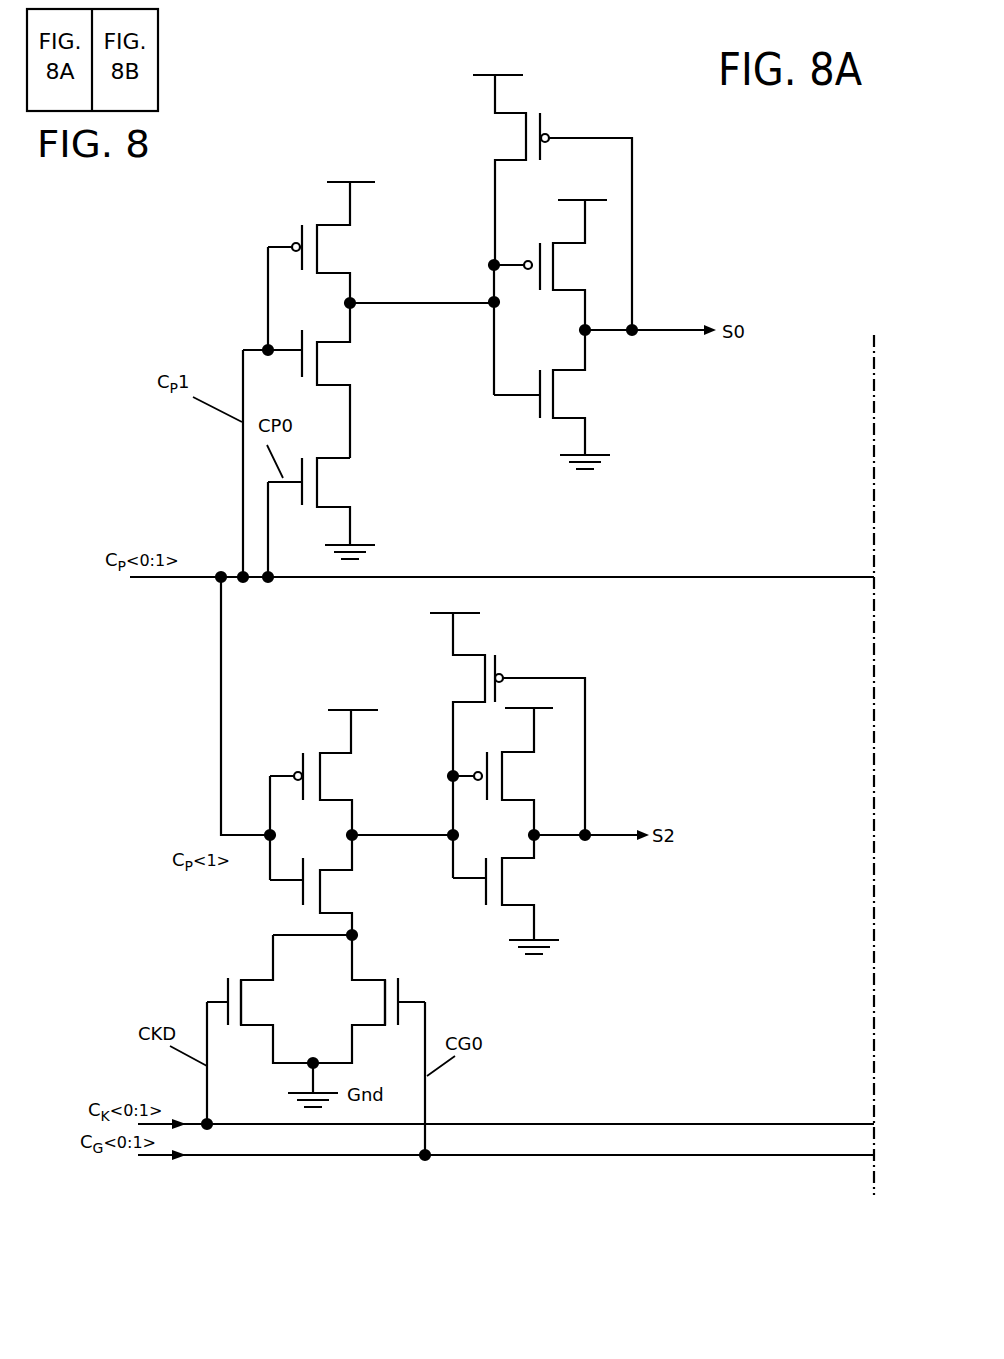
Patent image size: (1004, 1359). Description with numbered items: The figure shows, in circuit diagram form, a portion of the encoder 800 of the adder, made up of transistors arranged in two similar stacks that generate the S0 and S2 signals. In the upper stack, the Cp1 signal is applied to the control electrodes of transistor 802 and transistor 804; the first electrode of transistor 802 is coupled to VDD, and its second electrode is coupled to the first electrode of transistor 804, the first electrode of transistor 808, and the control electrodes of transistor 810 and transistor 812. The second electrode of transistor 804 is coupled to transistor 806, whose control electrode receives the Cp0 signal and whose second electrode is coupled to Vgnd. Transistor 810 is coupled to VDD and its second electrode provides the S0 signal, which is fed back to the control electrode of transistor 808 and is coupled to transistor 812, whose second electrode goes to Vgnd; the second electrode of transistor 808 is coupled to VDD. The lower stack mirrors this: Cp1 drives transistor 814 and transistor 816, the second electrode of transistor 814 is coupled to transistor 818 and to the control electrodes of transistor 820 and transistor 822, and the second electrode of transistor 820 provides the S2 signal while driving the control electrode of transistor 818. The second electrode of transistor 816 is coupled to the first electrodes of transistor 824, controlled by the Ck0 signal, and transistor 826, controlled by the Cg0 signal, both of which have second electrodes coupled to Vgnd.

The encoder 800 is at (138, 868).
The transistor 802 is at (302, 228).
The transistor 804 is at (309, 374).
The transistor 806 is at (312, 500).
The transistor 808 is at (542, 118).
The transistor 810 is at (538, 293).
The transistor 812 is at (538, 405).
The transistor 814 is at (300, 758).
The transistor 816 is at (308, 890).
The transistor 818 is at (497, 662).
The transistor 820 is at (492, 765).
The transistor 822 is at (484, 883).
The transistor 824 is at (226, 986).
The transistor 826 is at (396, 1027).